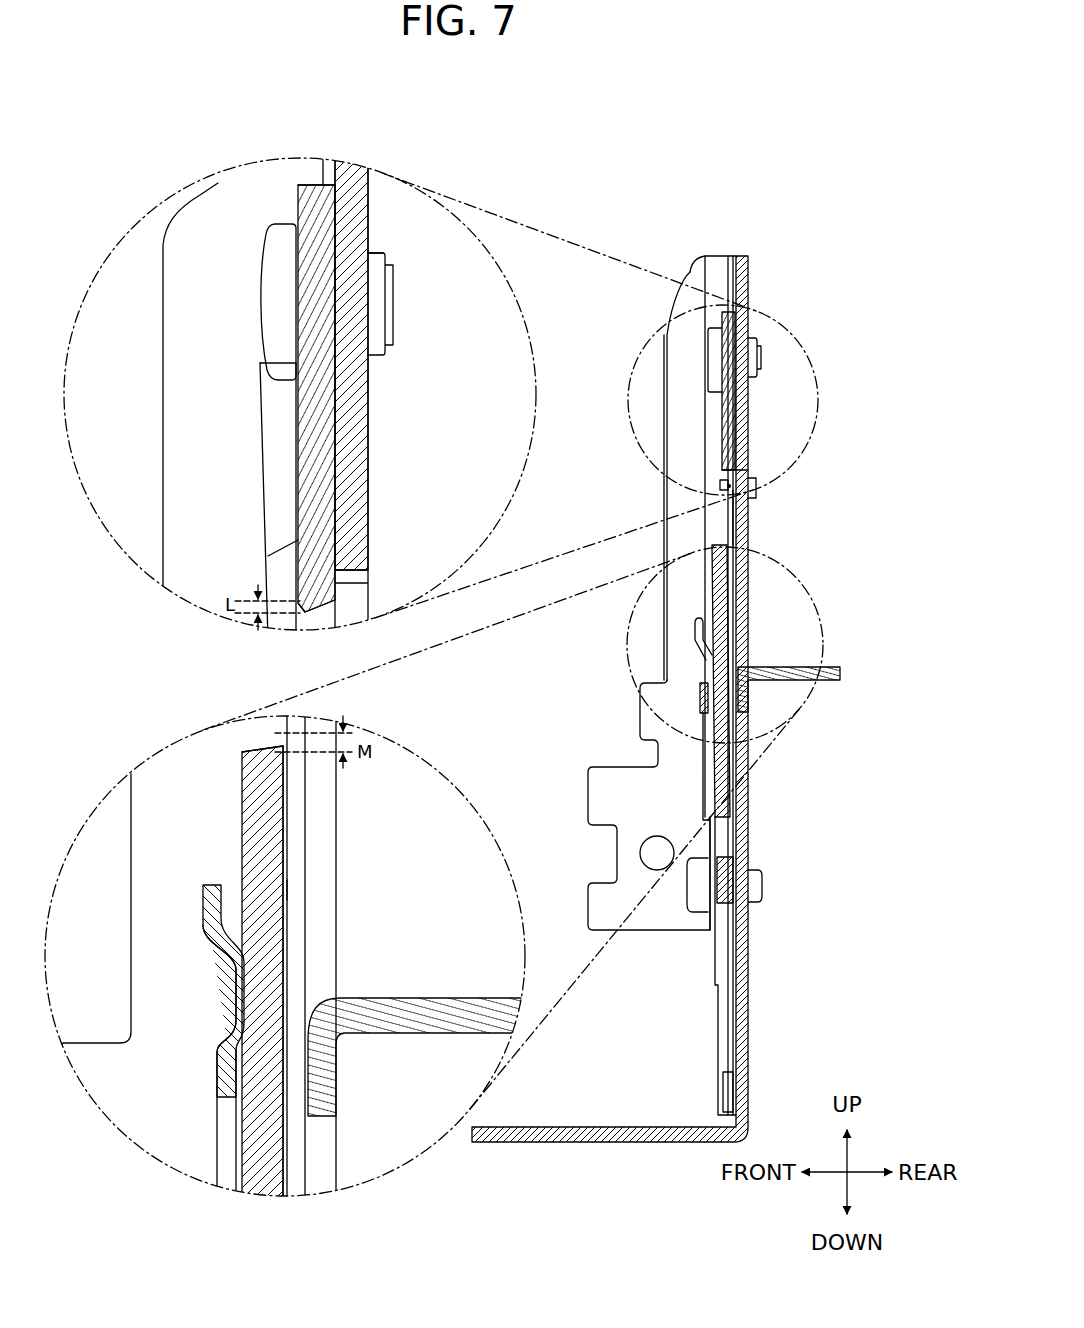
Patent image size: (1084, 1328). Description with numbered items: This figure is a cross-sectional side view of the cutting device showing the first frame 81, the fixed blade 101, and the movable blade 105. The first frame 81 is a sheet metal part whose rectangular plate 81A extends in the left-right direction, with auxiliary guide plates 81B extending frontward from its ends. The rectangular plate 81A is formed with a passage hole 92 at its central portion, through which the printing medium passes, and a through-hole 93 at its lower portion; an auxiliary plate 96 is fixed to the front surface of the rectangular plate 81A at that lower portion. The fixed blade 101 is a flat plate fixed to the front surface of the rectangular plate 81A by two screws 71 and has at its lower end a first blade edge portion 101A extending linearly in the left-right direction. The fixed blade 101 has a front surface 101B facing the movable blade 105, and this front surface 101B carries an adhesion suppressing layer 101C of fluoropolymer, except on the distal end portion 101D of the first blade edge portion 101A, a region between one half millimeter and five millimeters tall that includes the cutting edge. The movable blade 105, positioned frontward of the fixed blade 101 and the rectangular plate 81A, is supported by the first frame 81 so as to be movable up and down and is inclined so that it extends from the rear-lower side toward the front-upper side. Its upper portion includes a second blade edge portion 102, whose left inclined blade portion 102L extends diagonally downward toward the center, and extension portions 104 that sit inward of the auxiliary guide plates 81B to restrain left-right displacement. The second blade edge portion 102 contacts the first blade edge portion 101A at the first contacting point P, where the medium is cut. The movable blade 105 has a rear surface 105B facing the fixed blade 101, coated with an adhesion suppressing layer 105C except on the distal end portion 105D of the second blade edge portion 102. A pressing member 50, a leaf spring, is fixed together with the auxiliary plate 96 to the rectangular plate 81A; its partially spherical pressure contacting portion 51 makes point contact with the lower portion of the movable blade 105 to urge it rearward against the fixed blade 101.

The pressing member 50 is at (700, 770).
The pressure contacting portion 51 is at (707, 653).
The screws 71 is at (682, 300).
The first frame 81 is at (752, 283).
The rectangular plate 81A is at (752, 345).
The auxiliary guide plates 81B is at (720, 268).
The passage hole 92 is at (750, 490).
The through-hole 93 is at (745, 918).
The auxiliary plate 96 is at (726, 1090).
The fixed blade 101 is at (722, 412).
The first blade edge portion 101A is at (752, 503).
The front surface 101B is at (292, 472).
The adhesion suppressing layer 101C is at (295, 497).
The distal end portion 101D is at (301, 613).
The second blade edge portion 102 is at (182, 749).
The left inclined blade portion 102L is at (752, 540).
The extension portions 104 is at (735, 508).
The movable blade 105 is at (732, 631).
The rear surface 105B is at (288, 877).
The adhesion suppressing layer 105C is at (288, 899).
The distal end portion 105D is at (285, 756).
The first contacting point P is at (728, 486).